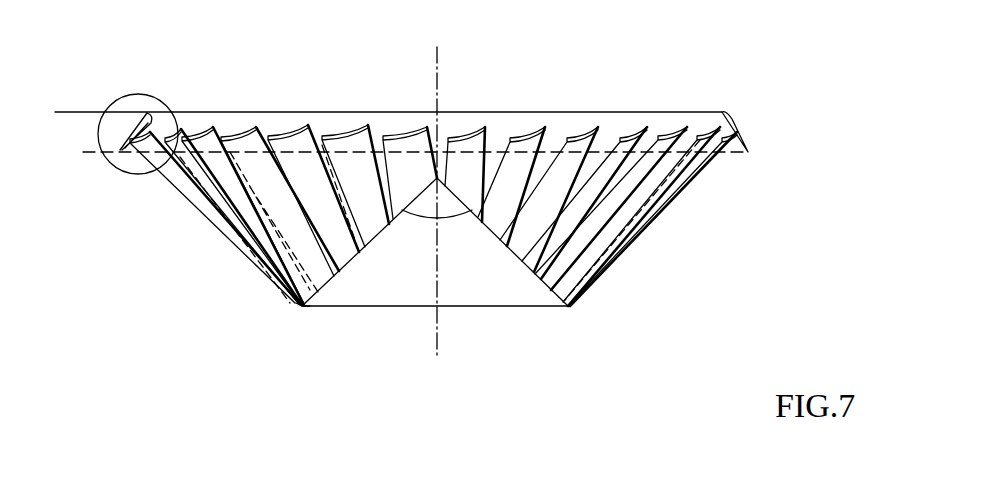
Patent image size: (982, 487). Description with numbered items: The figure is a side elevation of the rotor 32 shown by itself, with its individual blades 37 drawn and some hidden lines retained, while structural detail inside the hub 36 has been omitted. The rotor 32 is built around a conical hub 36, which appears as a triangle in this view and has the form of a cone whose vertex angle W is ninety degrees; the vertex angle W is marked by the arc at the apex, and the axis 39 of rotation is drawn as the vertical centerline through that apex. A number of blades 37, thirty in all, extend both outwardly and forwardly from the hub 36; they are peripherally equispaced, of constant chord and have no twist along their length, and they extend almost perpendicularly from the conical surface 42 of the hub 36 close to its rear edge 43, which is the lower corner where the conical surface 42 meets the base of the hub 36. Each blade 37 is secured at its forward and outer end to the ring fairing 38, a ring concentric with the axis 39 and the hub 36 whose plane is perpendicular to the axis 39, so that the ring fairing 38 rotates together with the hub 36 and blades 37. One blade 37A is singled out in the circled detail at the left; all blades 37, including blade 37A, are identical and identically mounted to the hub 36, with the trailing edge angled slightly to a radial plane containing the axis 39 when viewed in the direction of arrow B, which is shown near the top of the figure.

The rotor 32 is at (150, 272).
The conical hub 36 is at (503, 290).
The blades 37 is at (274, 143).
The blade 37A is at (187, 203).
The ring fairing 38 is at (738, 113).
The axis 39 is at (435, 58).
The conical surface 42 is at (268, 272).
The rear edge 43 is at (293, 302).
The vertex angle W is at (422, 215).
The arrow B is at (552, 84).